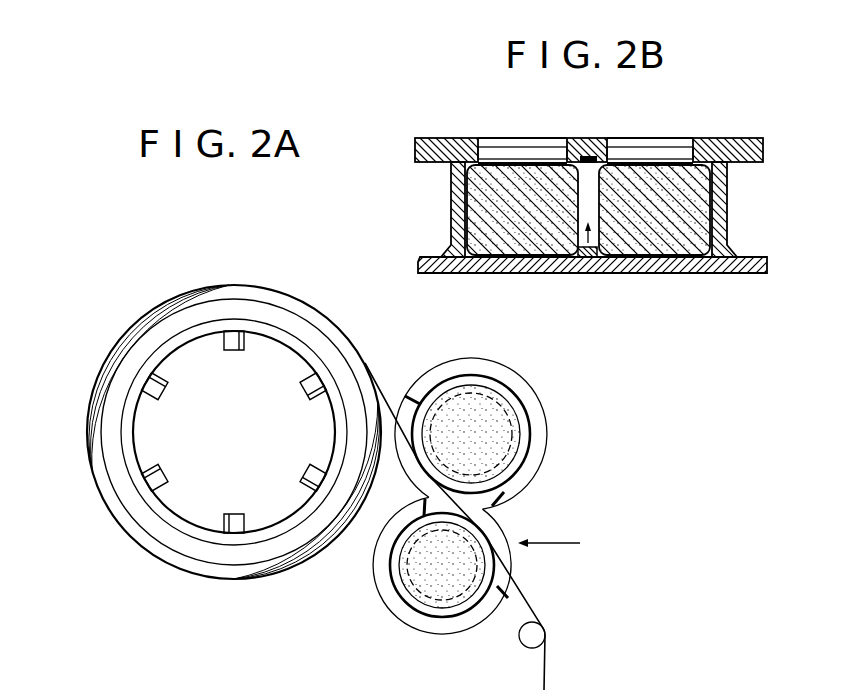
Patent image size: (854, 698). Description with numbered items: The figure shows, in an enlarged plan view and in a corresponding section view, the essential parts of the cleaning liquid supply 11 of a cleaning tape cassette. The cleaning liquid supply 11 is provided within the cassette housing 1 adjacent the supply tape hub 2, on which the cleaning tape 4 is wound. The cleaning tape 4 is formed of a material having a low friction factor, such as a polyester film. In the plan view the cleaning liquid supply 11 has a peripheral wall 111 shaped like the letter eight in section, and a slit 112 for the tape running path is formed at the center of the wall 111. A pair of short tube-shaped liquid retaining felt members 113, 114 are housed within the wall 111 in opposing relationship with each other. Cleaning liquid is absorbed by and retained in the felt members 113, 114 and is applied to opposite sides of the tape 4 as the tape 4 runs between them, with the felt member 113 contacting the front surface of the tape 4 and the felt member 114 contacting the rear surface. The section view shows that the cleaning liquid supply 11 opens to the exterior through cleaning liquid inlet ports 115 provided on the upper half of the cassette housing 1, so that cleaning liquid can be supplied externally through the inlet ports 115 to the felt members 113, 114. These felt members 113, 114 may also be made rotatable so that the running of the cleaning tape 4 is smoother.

In FIG. 2B, the cassette housing 1 is at (737, 265).
In FIG. 2A, the supply tape hub 2 is at (182, 338).
In FIG. 2A, the cleaning tape 4 is at (378, 390).
In FIG. 2A, the cleaning liquid supply 11 is at (397, 471).
In FIG. 2B, the cleaning liquid supply 11 is at (600, 291).
In FIG. 2A, the peripheral wall 111 is at (530, 410).
In FIG. 2B, the peripheral wall 111 is at (463, 203).
In FIG. 2A, the slit 112 is at (564, 545).
In FIG. 2B, the slit 112 is at (587, 249).
In FIG. 2A, the liquid retaining felt member 113 is at (500, 447).
In FIG. 2B, the liquid retaining felt member 113 is at (677, 237).
In FIG. 2A, the liquid retaining felt member 114 is at (455, 600).
In FIG. 2B, the liquid retaining felt member 114 is at (492, 237).
In FIG. 2A, the cleaning liquid inlet port 115 is at (487, 457).
In FIG. 2B, the cleaning liquid inlet port 115 is at (502, 153).